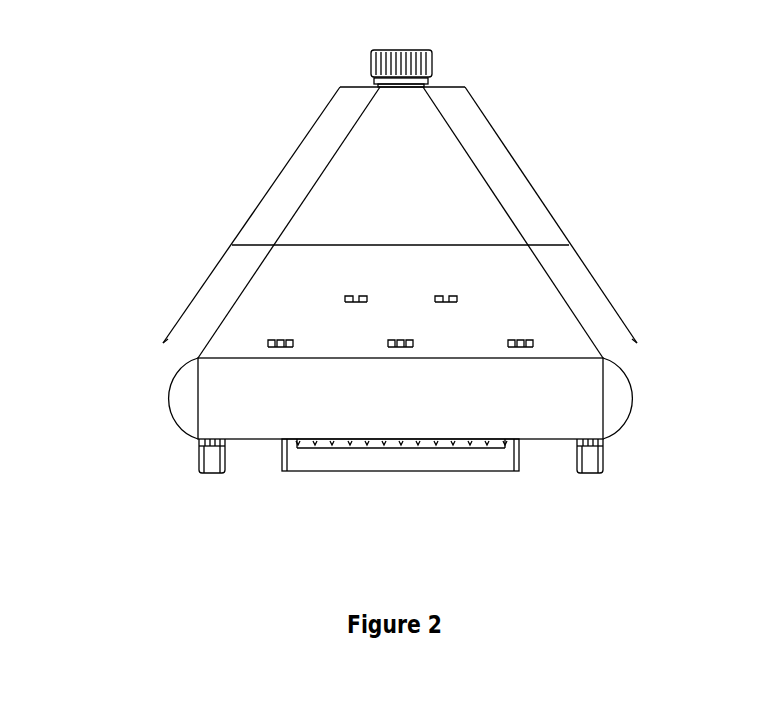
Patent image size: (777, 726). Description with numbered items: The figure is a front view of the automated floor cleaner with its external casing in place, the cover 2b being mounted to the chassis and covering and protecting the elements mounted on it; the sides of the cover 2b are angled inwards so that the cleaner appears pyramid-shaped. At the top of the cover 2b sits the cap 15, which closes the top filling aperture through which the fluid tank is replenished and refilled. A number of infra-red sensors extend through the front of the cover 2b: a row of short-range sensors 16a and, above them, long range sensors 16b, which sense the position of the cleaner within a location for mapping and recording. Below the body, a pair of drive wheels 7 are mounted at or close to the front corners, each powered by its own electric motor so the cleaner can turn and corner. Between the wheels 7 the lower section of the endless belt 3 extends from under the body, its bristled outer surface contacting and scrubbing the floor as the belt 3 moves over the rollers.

The cap 15 is at (398, 65).
The cover 2b is at (440, 177).
The long range sensors 16b is at (445, 298).
The short-range sensors 16a is at (515, 342).
The drive wheels 7 is at (205, 458).
The endless belt 3 is at (452, 470).